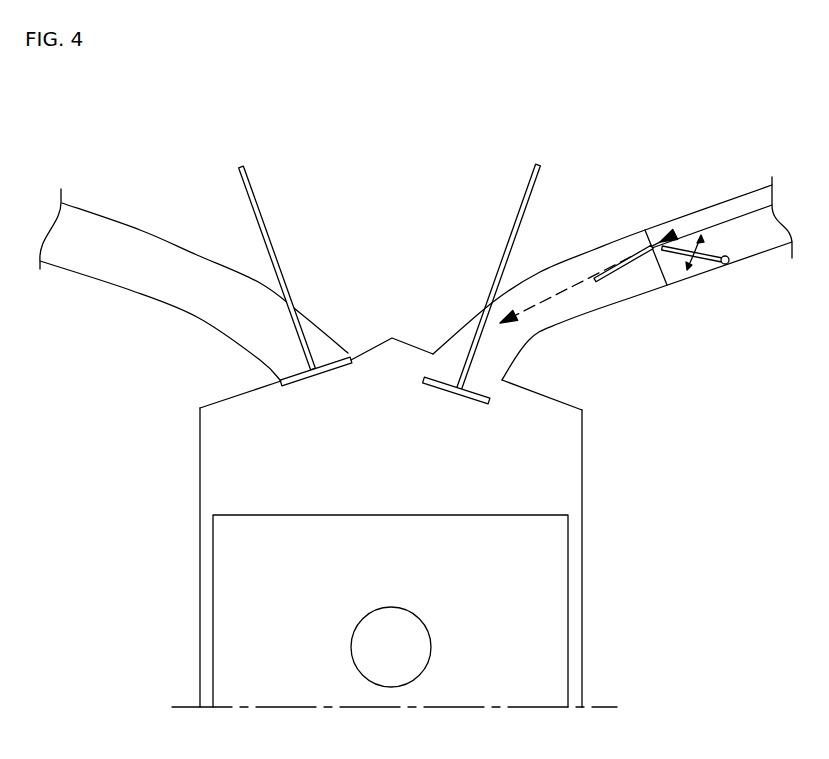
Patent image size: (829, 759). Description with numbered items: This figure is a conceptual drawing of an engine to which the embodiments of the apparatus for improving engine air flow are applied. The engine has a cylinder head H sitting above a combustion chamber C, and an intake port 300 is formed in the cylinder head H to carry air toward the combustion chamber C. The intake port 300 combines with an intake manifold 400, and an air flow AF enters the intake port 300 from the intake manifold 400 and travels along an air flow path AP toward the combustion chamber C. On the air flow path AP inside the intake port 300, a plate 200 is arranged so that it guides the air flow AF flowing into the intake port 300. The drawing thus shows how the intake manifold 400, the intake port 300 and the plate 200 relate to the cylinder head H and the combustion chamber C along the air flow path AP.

The plate 200 is at (623, 278).
The intake port 300 is at (594, 309).
The intake manifold 400 is at (682, 215).
The cylinder head H is at (364, 331).
The combustion chamber C is at (241, 459).
The air flow path AP is at (600, 267).
The air flow AF is at (743, 210).